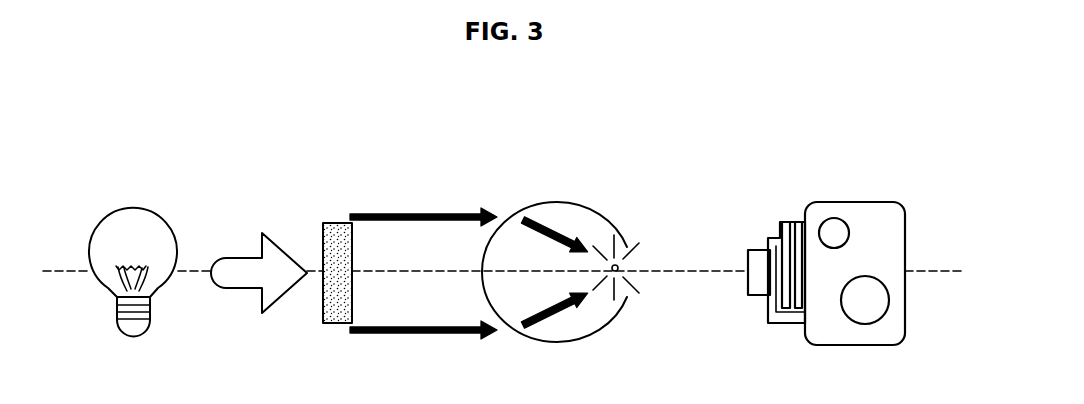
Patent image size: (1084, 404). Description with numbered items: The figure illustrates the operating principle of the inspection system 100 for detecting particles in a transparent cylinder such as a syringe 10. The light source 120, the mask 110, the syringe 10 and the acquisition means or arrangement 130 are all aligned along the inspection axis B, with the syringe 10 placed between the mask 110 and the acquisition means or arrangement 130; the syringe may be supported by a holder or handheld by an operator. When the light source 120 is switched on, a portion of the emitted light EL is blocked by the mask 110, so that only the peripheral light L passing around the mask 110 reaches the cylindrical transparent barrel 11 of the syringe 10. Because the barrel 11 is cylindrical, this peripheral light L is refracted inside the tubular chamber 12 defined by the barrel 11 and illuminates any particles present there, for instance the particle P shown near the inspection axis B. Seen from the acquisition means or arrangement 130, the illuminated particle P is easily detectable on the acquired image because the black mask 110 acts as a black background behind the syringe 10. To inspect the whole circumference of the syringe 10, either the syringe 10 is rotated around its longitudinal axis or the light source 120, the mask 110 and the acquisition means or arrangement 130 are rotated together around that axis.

The inspection system 100 is at (502, 226).
The light source 120 is at (156, 251).
The emitted light EL is at (243, 288).
The mask 110 is at (310, 258).
The peripheral light L is at (424, 334).
The syringe 10 is at (585, 246).
The cylindrical transparent barrel 11 is at (605, 205).
The tubular chamber 12 is at (601, 334).
The particle P is at (622, 264).
The acquisition means or arrangement 130 is at (826, 243).
The inspection axis B is at (928, 271).